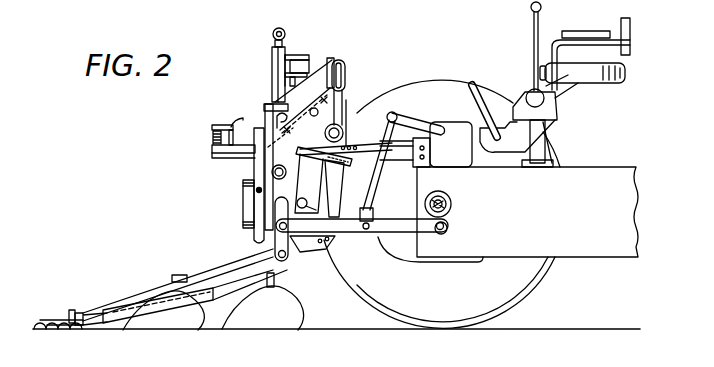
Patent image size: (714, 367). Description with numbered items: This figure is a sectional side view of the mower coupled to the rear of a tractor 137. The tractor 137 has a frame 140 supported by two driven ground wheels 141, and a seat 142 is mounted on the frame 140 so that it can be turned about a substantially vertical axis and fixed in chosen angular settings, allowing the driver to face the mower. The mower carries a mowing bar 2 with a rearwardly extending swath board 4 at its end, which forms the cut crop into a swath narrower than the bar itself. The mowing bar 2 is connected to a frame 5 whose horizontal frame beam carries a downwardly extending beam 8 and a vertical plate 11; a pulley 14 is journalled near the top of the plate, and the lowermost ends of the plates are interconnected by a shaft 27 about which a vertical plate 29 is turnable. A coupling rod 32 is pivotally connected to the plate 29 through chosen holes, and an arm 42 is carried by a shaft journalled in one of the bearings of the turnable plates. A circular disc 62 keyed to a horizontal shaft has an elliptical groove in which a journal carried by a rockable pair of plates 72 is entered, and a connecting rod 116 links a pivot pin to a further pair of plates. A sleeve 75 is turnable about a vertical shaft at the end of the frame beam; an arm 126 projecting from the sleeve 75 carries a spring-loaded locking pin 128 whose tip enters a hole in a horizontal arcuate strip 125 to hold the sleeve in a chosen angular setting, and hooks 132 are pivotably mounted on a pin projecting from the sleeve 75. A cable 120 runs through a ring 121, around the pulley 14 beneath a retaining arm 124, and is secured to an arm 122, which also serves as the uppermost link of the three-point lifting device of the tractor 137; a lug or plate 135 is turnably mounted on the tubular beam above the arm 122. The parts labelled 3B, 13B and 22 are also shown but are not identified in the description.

The mowing bar 2 is at (45, 314).
The bracket 3B is at (185, 275).
The swath board 4 is at (173, 325).
The frame 5 is at (288, 171).
The beam 8 is at (302, 200).
The vertical plate 11 is at (301, 248).
The horizontal link bar 13B is at (385, 238).
The pulley 14 is at (346, 79).
The frame arc 22 is at (348, 104).
The shaft 27 is at (260, 256).
The vertical plate 29 is at (121, 308).
The coupling rod 32 is at (340, 193).
The arm 42 is at (274, 283).
The circular disc 62 is at (243, 205).
The plate 72 is at (255, 168).
The sleeve 75 is at (271, 60).
The connecting rod 116 is at (256, 190).
The cable 120 is at (303, 78).
The ring 121 is at (272, 36).
The arm 122 is at (388, 150).
The retaining arm 124 is at (347, 63).
The arcuate strip 125 is at (211, 158).
The arm 126 is at (212, 148).
The locking pin 128 is at (226, 117).
The hook 132 is at (331, 63).
The lug or plate 135 is at (352, 142).
The tractor 137 is at (593, 257).
The frame 140 is at (528, 250).
The driven ground wheel 141 is at (503, 312).
The seat 142 is at (607, 84).